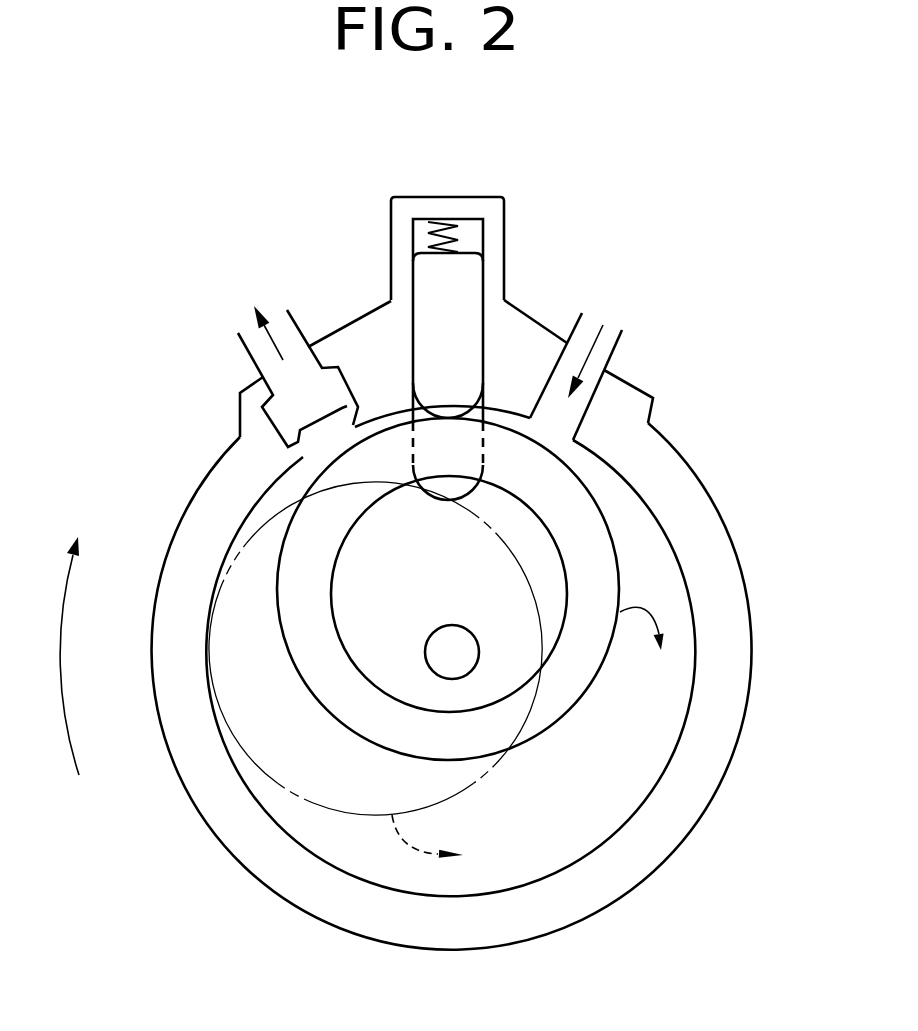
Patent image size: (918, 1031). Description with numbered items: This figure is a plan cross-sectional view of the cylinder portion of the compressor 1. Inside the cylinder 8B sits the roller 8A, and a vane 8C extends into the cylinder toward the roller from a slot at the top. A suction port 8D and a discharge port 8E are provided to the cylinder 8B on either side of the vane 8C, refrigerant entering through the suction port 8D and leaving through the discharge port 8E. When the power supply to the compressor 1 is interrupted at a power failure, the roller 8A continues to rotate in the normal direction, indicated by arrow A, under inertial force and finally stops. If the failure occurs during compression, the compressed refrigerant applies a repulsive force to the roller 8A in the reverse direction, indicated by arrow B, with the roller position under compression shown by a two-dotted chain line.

The compressor 1 is at (150, 294).
The roller 8A is at (353, 732).
The cylinder 8B is at (679, 849).
The vane 8C is at (452, 350).
The suction port 8D is at (625, 342).
The discharge port 8E is at (240, 393).